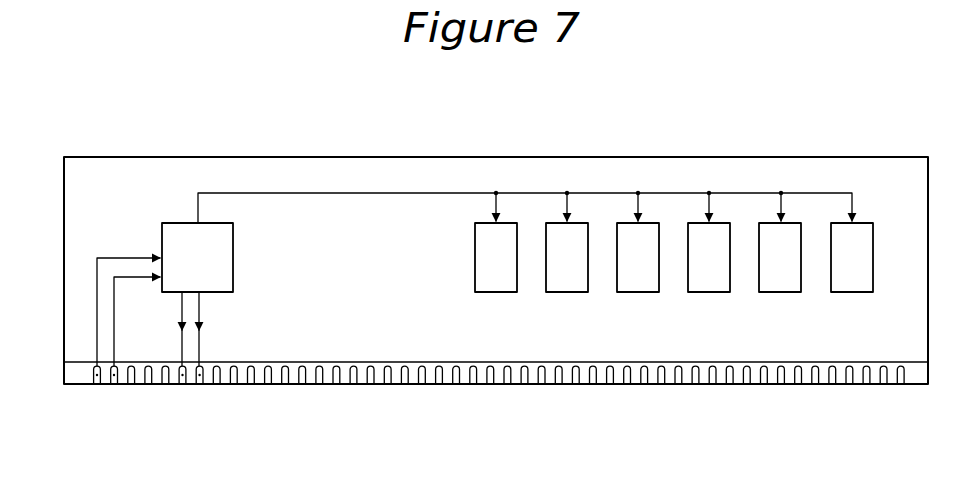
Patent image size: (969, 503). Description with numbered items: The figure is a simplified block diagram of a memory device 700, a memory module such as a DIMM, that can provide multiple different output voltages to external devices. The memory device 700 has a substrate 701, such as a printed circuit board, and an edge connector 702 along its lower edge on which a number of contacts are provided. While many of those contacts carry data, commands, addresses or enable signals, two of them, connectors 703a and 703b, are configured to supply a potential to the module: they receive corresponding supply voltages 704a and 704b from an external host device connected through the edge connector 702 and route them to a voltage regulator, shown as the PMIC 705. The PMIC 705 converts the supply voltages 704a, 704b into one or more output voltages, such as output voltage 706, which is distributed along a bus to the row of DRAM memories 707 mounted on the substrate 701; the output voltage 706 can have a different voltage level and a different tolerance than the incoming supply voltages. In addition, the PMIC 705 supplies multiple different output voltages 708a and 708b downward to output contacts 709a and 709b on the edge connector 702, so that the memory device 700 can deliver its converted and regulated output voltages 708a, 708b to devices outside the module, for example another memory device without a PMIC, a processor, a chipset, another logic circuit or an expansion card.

The memory device 700 is at (133, 100).
The substrate 701 is at (82, 208).
The edge connector 702 is at (80, 378).
The connector 703a is at (97, 385).
The connector 703b is at (112, 385).
The supply voltage 704a is at (96, 268).
The supply voltage 704b is at (114, 332).
The PMIC 705 is at (163, 222).
The output voltage 706 is at (335, 192).
The DRAM memories 707 is at (496, 293).
The output voltage 708a is at (183, 303).
The output voltage 708b is at (200, 340).
The output contact 709a is at (182, 385).
The output contact 709b is at (199, 385).